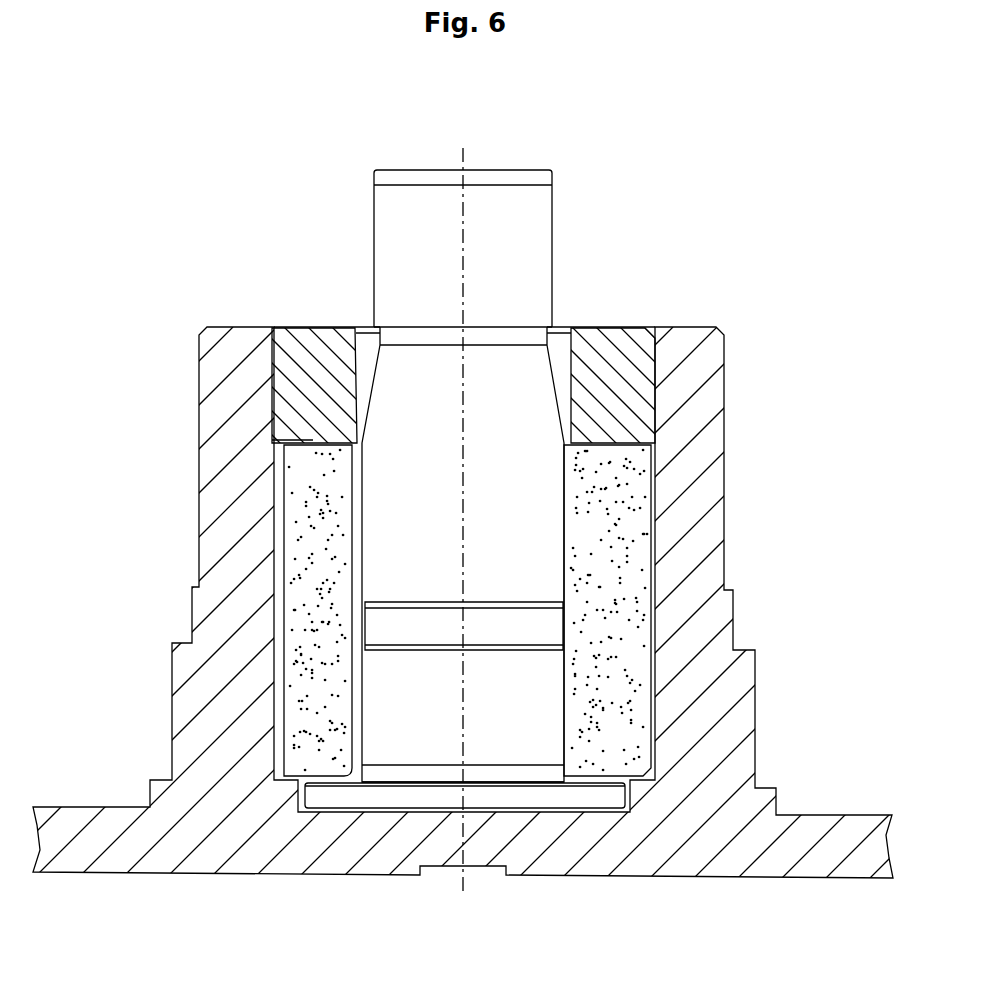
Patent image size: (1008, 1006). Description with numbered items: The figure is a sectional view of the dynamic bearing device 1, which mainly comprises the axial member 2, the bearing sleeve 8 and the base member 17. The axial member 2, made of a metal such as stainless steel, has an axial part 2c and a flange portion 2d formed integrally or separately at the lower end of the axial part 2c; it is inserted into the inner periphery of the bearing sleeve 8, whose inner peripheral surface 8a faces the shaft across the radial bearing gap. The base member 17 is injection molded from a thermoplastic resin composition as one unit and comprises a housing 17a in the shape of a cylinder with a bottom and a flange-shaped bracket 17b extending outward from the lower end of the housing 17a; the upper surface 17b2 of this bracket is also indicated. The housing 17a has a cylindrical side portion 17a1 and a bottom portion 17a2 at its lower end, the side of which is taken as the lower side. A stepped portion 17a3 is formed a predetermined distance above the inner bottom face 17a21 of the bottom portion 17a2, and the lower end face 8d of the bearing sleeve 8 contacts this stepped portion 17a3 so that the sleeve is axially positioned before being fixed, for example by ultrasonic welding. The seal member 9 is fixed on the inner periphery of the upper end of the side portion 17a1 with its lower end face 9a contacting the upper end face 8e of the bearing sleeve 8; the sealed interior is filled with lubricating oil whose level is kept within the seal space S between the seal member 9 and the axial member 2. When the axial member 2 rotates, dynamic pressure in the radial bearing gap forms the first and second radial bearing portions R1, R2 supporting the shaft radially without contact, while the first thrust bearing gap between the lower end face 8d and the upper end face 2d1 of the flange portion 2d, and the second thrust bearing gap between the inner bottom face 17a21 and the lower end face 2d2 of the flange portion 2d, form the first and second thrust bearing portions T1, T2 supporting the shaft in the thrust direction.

The dynamic bearing device 1 is at (720, 226).
The axial member 2 is at (566, 221).
The axial part 2c is at (533, 493).
The flange portion 2d is at (612, 796).
The upper end face of the flange portion 2d1 is at (597, 775).
The lower end face of the flange portion 2d2 is at (594, 818).
The bearing sleeve 8 is at (661, 579).
The inner peripheral surface of the bearing sleeve 8a is at (552, 547).
The lower end face of the bearing sleeve 8d is at (342, 786).
The upper end face of the bearing sleeve 8e is at (587, 443).
The seal member 9 is at (291, 330).
The lower end face of the seal member 9a is at (313, 455).
The seal space S is at (366, 383).
The base member 17 is at (141, 617).
The housing 17a is at (738, 365).
The side portion 17a1 is at (222, 409).
The bottom portion 17a2 is at (522, 852).
The inner bottom face 17a21 is at (377, 822).
The stepped portion 17a3 is at (627, 770).
The bracket 17b is at (793, 843).
The base upper surface 17b2 is at (843, 814).
The first radial bearing portion R1 is at (335, 525).
The second radial bearing portion R2 is at (335, 700).
The first thrust bearing portion T1 is at (320, 778).
The second thrust bearing portion T2 is at (313, 812).